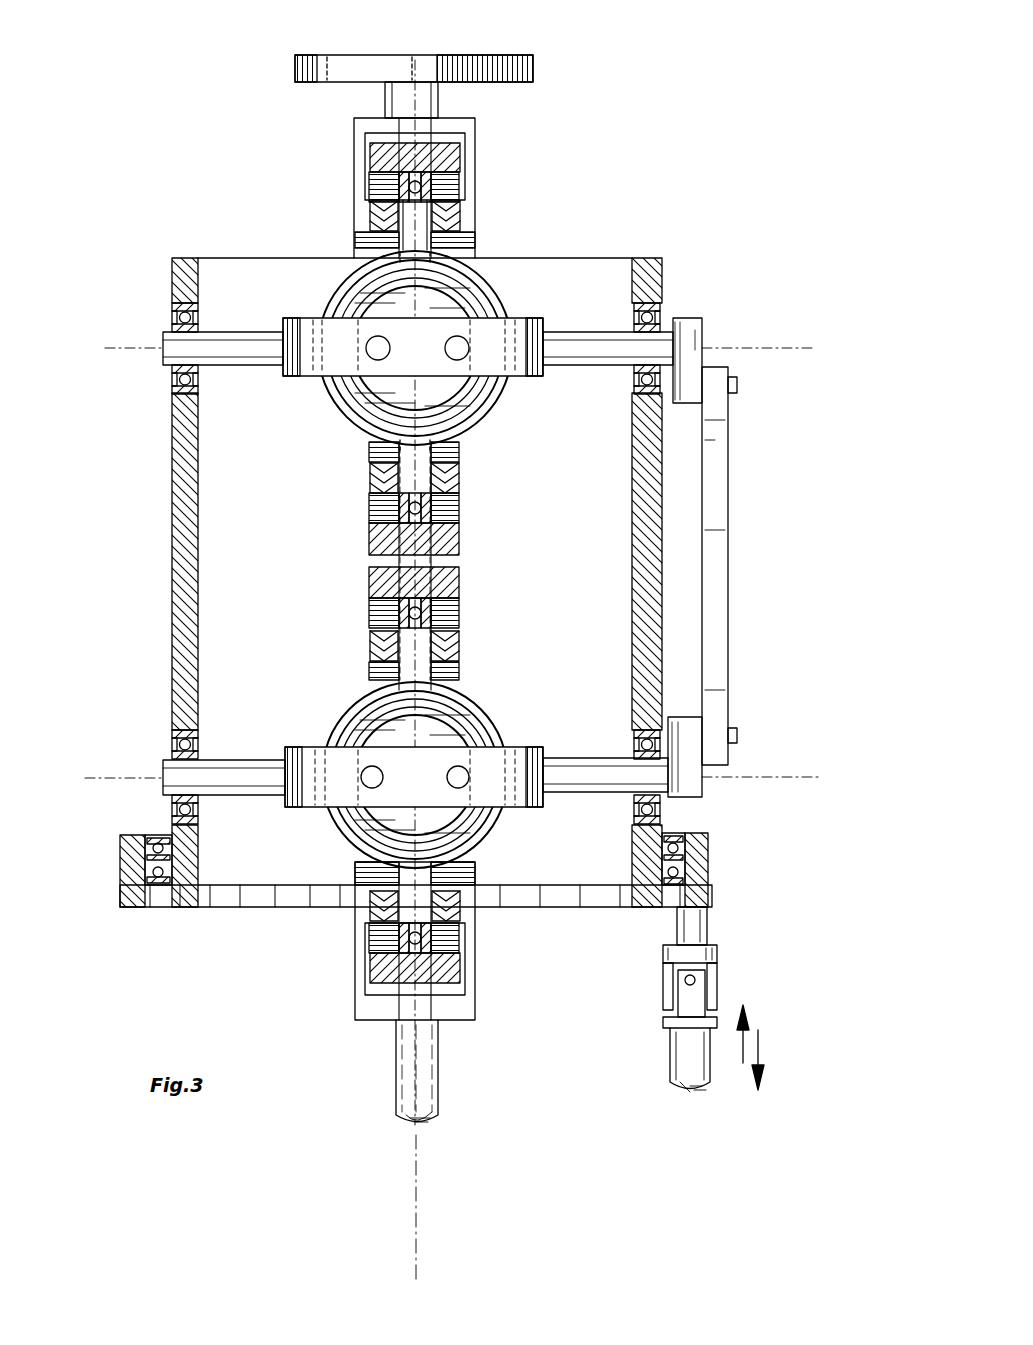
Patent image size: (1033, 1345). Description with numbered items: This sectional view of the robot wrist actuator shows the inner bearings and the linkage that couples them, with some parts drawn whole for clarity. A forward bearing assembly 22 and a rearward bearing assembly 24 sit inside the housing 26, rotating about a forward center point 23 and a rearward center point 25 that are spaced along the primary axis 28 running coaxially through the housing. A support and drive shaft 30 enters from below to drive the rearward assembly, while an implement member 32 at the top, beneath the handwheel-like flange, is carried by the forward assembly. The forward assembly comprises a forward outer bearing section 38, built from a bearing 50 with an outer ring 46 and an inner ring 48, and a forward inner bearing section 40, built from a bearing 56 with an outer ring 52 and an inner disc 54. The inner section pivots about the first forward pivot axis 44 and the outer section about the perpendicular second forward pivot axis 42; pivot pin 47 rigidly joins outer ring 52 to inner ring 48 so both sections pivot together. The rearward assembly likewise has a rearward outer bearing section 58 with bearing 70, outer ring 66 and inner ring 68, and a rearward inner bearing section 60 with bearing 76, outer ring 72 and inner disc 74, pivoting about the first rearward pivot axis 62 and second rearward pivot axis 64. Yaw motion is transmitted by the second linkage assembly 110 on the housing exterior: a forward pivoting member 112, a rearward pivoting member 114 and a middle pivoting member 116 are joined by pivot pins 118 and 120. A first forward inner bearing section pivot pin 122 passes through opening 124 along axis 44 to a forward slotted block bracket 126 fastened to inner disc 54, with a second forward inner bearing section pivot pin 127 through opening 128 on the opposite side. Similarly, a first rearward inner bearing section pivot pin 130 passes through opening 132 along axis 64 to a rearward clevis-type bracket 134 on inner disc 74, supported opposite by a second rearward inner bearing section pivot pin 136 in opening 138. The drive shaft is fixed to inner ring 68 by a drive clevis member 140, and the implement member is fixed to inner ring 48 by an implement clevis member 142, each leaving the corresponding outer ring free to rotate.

The forward bearing assembly 22 is at (436, 331).
The forward center point 23 is at (415, 350).
The rearward bearing assembly 24 is at (436, 765).
The rearward center point 25 is at (415, 785).
The housing 26 is at (185, 556).
The primary axis 28 is at (418, 1160).
The support and drive shaft 30 is at (432, 1062).
The implement member 32 is at (485, 72).
The forward outer bearing section 38 is at (470, 472).
The forward inner bearing section 40 is at (512, 295).
The second forward pivot axis 42 is at (415, 350).
The first forward pivot axis 44 is at (125, 348).
The outer ring 46 is at (458, 540).
The pivot pin 47 is at (382, 212).
The inner ring 48 is at (372, 490).
The bearing 50 is at (458, 508).
The outer ring 52 is at (470, 280).
The inner disc 54 is at (388, 310).
The bearing 56 is at (355, 262).
The rearward outer bearing section 58 is at (360, 619).
The rearward inner bearing section 60 is at (518, 732).
The first rearward pivot axis 62 is at (415, 785).
The second rearward pivot axis 64 is at (130, 777).
The outer ring 66 is at (458, 577).
The inner ring 68 is at (458, 645).
The bearing 70 is at (458, 615).
The outer ring 72 is at (475, 710).
The inner disc 74 is at (387, 735).
The bearing 76 is at (385, 713).
The second linkage assembly 110 is at (750, 555).
The forward pivoting member 112 is at (700, 357).
The rearward pivoting member 114 is at (700, 790).
The middle pivoting member 116 is at (722, 600).
The pivot pin 118 is at (737, 385).
The pivot pin 120 is at (737, 735).
The first forward inner bearing section pivot pin 122 is at (690, 340).
The opening 124 is at (670, 318).
The forward slotted block bracket 126 is at (547, 330).
The second forward inner bearing section pivot pin 127 is at (175, 340).
The opening 128 is at (175, 310).
The first rearward inner bearing section pivot pin 130 is at (668, 795).
The opening 132 is at (640, 752).
The rearward clevis-type bracket 134 is at (438, 733).
The second rearward inner bearing section pivot pin 136 is at (215, 762).
The opening 138 is at (180, 745).
The drive clevis member 140 is at (468, 1007).
The implement clevis member 142 is at (468, 205).